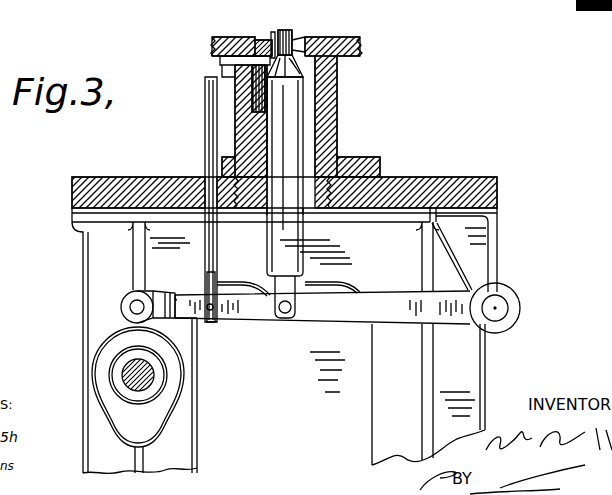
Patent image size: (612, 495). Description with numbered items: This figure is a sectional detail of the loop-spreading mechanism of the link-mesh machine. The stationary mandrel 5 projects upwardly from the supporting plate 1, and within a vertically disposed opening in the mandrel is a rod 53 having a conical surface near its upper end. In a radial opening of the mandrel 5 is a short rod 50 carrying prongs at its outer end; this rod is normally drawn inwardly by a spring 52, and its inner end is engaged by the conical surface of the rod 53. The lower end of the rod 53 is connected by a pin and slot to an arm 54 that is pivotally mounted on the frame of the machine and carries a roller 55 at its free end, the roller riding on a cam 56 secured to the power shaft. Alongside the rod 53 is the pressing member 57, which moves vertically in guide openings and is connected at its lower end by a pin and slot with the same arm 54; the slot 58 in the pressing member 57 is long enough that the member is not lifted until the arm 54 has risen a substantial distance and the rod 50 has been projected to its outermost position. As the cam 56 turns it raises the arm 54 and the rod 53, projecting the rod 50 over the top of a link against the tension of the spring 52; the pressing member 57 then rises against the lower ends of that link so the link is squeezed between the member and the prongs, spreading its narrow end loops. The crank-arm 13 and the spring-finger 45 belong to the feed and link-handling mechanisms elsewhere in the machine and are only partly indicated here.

The supporting plate 1 is at (470, 180).
The stationary mandrel 5 is at (337, 105).
The crank-arm 13 is at (137, 17).
The spring-finger 45 is at (296, 42).
The short rod 50 is at (243, 58).
The spring 52 is at (272, 36).
The rod 53 is at (283, 135).
The arm 54 is at (320, 313).
The roller 55 is at (127, 297).
The cam 56 is at (157, 408).
The pressing member 57 is at (205, 137).
The slot 58 is at (208, 287).